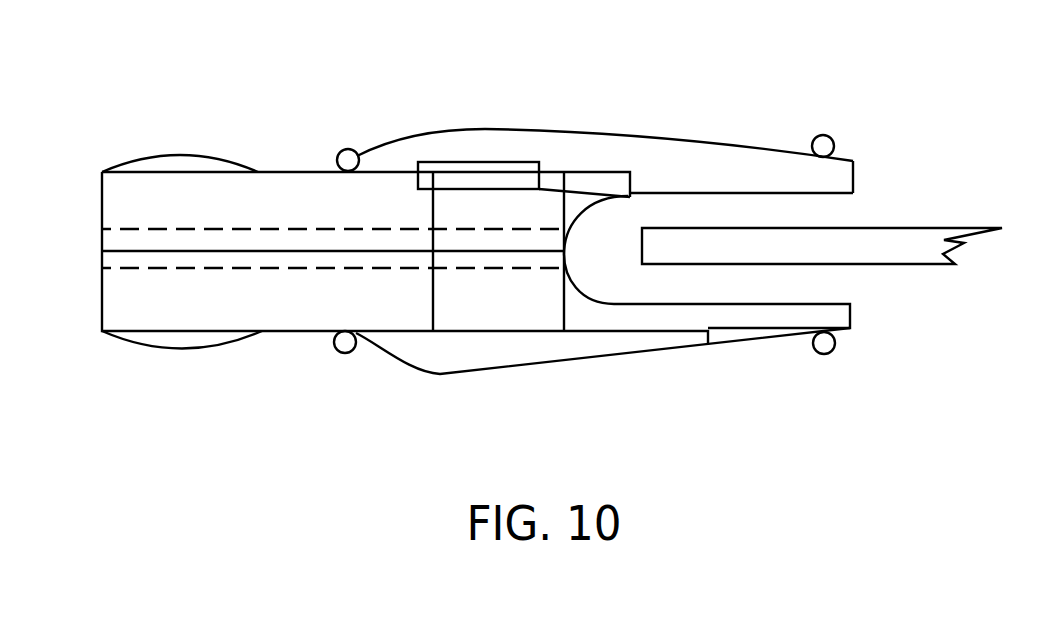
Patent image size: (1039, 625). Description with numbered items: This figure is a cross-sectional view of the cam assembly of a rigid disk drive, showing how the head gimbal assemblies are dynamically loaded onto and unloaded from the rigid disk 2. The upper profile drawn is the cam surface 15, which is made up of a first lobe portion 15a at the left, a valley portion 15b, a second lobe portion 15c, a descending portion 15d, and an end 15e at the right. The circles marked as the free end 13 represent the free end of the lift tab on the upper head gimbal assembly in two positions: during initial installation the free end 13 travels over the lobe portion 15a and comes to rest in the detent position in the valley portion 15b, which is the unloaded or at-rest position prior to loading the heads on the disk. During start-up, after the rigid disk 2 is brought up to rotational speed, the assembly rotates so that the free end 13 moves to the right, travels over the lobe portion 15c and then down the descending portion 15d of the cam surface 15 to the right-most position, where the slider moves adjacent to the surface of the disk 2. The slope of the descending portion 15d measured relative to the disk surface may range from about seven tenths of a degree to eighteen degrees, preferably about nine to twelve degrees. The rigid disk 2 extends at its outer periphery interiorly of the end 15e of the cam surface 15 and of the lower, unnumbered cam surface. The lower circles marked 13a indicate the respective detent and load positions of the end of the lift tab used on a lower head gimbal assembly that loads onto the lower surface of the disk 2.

The rigid disk 2 is at (918, 226).
The free end of lift tab 13 is at (338, 152).
The free end of lift tab of lower gimbal assembly 13a is at (345, 353).
The cam surface 15 is at (410, 141).
The lobe portion 15a is at (183, 157).
The valley portion 15b is at (297, 172).
The lobe portion 15c is at (497, 130).
The descending portion 15d is at (748, 150).
The end of cam surface 15e is at (855, 177).